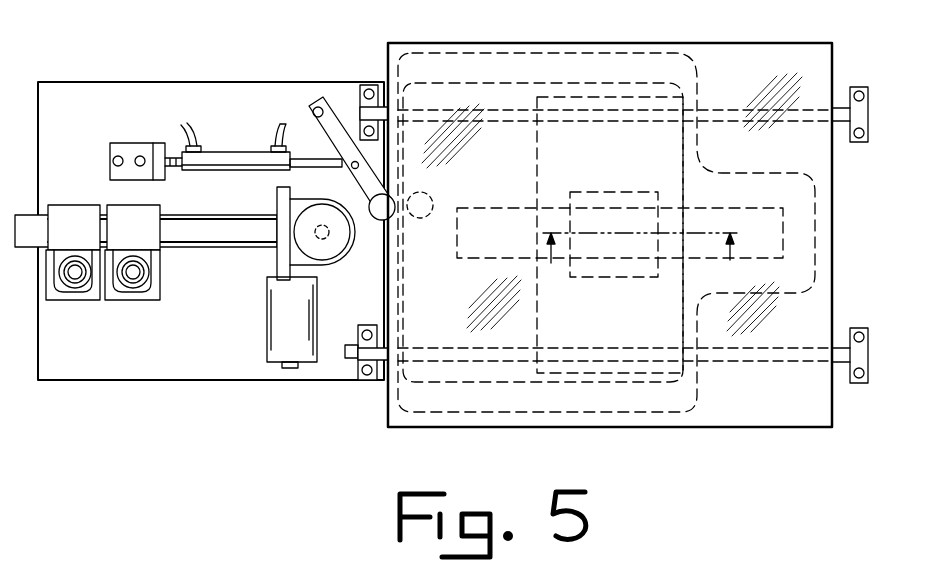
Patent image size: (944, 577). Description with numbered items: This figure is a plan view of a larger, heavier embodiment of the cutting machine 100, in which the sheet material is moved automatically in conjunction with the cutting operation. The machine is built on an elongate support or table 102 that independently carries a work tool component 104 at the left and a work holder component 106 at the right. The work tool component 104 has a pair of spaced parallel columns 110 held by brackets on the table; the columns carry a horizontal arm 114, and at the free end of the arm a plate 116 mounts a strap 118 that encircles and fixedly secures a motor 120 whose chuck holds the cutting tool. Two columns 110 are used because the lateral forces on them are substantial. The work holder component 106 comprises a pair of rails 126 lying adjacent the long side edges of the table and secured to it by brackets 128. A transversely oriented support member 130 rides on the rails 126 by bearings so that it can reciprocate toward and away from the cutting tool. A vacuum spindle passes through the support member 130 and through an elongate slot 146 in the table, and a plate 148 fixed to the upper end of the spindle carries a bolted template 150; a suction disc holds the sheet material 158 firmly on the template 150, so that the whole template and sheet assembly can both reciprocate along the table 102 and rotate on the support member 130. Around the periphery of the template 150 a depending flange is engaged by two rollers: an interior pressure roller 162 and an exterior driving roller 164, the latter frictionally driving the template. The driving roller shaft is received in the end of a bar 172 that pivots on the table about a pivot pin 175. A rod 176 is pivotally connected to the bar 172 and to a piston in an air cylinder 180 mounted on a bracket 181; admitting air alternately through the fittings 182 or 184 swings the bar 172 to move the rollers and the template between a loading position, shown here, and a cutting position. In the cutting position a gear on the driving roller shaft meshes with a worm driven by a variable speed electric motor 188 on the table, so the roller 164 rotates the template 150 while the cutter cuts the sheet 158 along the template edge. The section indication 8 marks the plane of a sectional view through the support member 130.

The cutting machine 100 is at (200, 402).
The support or table 102 is at (182, 82).
The work tool component 104 is at (133, 352).
The work holder component 106 is at (760, 471).
The columns 110 is at (122, 292).
The horizontal arm 114 is at (177, 247).
The plate 116 is at (277, 200).
The strap 118 is at (276, 240).
The motor 120 is at (330, 248).
The rails or bars 126 is at (383, 98).
The brackets 128 is at (367, 98).
The support member 130 is at (682, 290).
The elongate slot 146 is at (693, 208).
The plate 148 is at (627, 188).
The template 150 is at (692, 410).
The sheet material 158 is at (550, 427).
The interior roller 162 is at (432, 190).
The exterior roller 164 is at (384, 222).
The bar 172 is at (308, 118).
The pivot pin 175 is at (312, 92).
The rod 176 is at (314, 168).
The cylinder 180 is at (232, 172).
The bracket 181 is at (110, 157).
The fitting 182 is at (185, 140).
The fitting 184 is at (276, 136).
The variable speed electric motor 188 is at (264, 303).
The section line 8- 8 is at (640, 269).